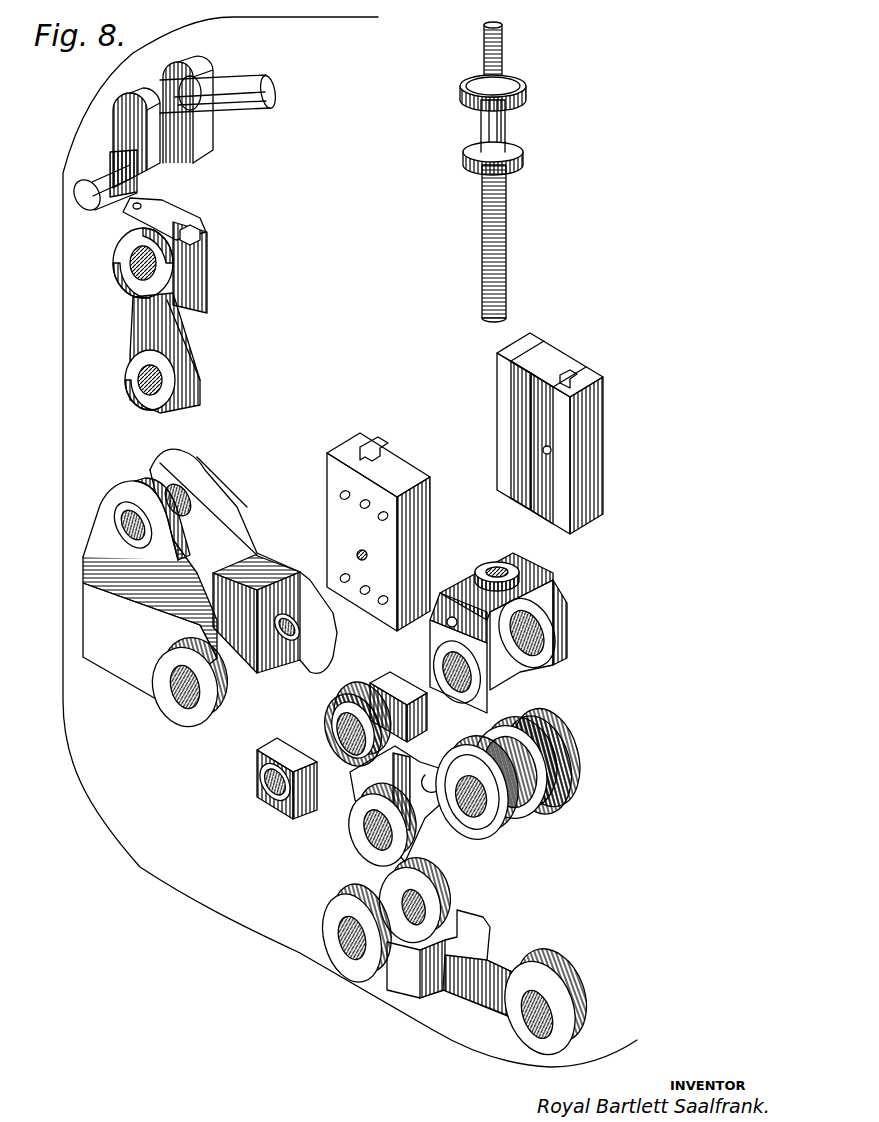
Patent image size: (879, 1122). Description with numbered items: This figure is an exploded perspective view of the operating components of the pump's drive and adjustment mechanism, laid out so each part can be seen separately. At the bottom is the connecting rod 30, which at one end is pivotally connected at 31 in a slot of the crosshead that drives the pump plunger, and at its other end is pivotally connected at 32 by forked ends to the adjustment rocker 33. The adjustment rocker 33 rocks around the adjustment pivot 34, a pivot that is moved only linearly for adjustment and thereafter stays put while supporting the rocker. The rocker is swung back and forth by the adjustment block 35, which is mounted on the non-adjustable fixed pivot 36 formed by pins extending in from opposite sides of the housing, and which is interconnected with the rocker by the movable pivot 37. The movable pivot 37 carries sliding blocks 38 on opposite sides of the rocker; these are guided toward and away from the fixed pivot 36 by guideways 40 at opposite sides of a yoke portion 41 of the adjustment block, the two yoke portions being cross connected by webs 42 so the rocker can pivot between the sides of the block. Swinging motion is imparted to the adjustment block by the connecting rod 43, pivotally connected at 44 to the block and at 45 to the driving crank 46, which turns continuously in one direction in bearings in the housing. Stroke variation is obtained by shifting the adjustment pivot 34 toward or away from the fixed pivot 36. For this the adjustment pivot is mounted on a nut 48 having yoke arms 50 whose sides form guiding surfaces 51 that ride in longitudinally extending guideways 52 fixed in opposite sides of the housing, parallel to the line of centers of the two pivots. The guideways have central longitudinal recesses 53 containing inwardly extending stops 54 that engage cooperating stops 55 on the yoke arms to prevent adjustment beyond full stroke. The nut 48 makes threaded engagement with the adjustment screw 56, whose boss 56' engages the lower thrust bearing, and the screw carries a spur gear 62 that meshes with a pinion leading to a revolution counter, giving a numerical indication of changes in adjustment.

The connecting rod 30 is at (497, 958).
The pivotal connection to crosshead 31 is at (527, 1030).
The pivotal connection to adjustment rocker 32 is at (357, 838).
The adjustment rocker 33 is at (365, 793).
The adjustment pivot 34 is at (476, 820).
The adjustment block 35 is at (226, 506).
The fixed pivot 36 is at (184, 706).
The movable pivot 37 is at (280, 812).
The sliding blocks 38 is at (388, 677).
The guideways 40 is at (262, 652).
The yoke portion 41 is at (136, 668).
The webs 42 is at (258, 575).
The connecting rod 43 is at (190, 332).
The pivotal connection to adjustment block 44 is at (140, 393).
The pivotal connection to driving crank 45 is at (187, 77).
The driving crank 46 is at (210, 108).
The nut 48 is at (516, 561).
The yoke arms 50 is at (568, 622).
The guiding surfaces 51 is at (566, 650).
The guideways 52 is at (540, 351).
The central longitudinal recesses 53 is at (562, 369).
The stops 54 is at (543, 450).
The cooperating stops 55 is at (452, 617).
The adjustment screw 56 is at (515, 172).
The boss 56' is at (521, 156).
The spur gear 62 is at (526, 93).